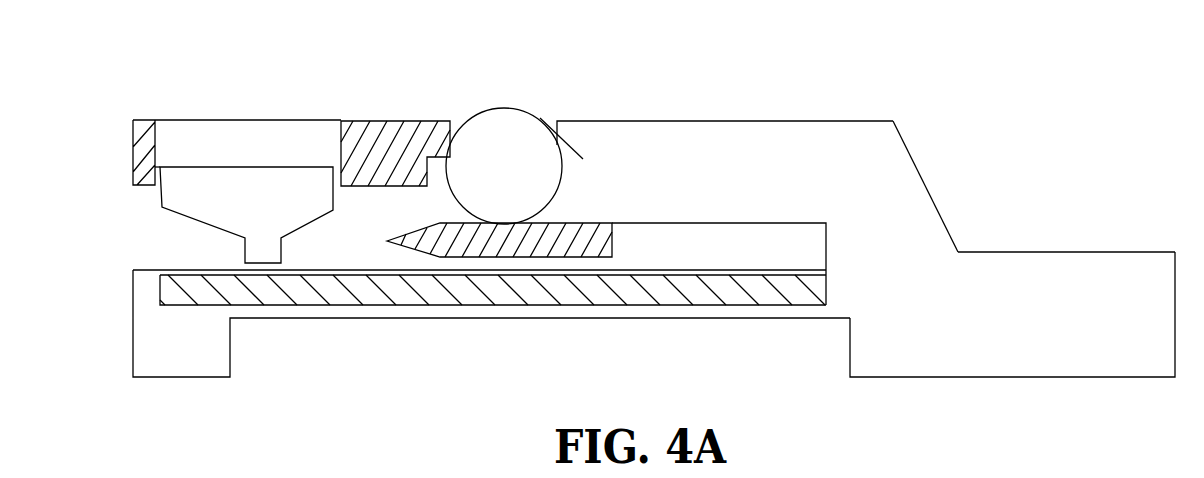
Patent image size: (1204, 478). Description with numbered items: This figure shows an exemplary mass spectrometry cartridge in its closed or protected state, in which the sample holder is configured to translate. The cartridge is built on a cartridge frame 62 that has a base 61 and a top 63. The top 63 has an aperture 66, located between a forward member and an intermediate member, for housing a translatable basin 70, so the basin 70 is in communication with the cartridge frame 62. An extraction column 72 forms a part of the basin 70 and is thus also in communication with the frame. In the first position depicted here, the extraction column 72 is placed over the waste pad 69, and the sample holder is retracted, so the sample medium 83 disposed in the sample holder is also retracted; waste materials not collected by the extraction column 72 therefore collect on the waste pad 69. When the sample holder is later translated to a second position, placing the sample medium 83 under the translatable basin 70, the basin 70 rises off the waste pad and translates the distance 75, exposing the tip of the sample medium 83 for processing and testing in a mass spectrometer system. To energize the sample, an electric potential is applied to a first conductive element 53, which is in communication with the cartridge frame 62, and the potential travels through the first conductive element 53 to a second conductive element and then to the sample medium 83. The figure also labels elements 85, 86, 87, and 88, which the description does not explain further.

The first conductive element 53 is at (477, 107).
The base 61 is at (353, 322).
The cartridge frame 62 is at (1060, 232).
The top 63 is at (722, 118).
The aperture 66 is at (1078, 97).
The waste pad 69 is at (821, 288).
The translatable basin 70 is at (312, 177).
The extraction column 72 is at (203, 264).
The distance 75 is at (230, 146).
The sample medium 83 is at (603, 225).
The spacer block 85 is at (396, 119).
The inclined wall 86 is at (902, 220).
The side wall 87 is at (144, 190).
The end plate 88 is at (155, 106).